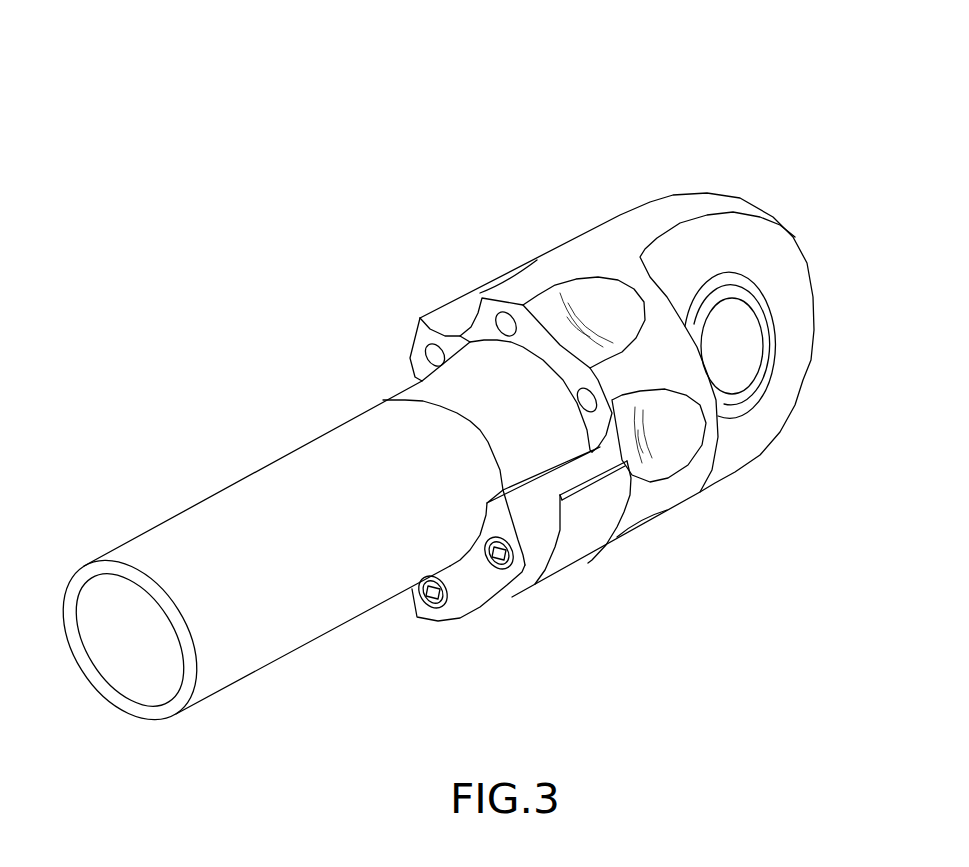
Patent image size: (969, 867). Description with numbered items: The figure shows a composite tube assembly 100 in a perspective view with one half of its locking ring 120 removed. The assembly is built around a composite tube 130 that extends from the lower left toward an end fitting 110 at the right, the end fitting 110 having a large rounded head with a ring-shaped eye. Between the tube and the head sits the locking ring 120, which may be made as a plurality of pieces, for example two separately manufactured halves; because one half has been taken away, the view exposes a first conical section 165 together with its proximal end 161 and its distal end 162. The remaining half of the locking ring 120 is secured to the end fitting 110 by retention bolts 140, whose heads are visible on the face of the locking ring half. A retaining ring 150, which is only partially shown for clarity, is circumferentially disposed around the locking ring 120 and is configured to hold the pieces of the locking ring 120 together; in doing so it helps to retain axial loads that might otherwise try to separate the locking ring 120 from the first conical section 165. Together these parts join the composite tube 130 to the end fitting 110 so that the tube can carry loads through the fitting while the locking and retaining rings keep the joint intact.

The composite tube assembly 100 is at (489, 96).
The end fitting 110 is at (580, 243).
The locking ring 120 is at (468, 592).
The composite tube 130 is at (155, 692).
The retention bolts 140 is at (430, 600).
The retaining ring 150 is at (596, 575).
The proximal end 161 is at (423, 397).
The distal end 162 is at (432, 329).
The first conical section 165 is at (450, 385).